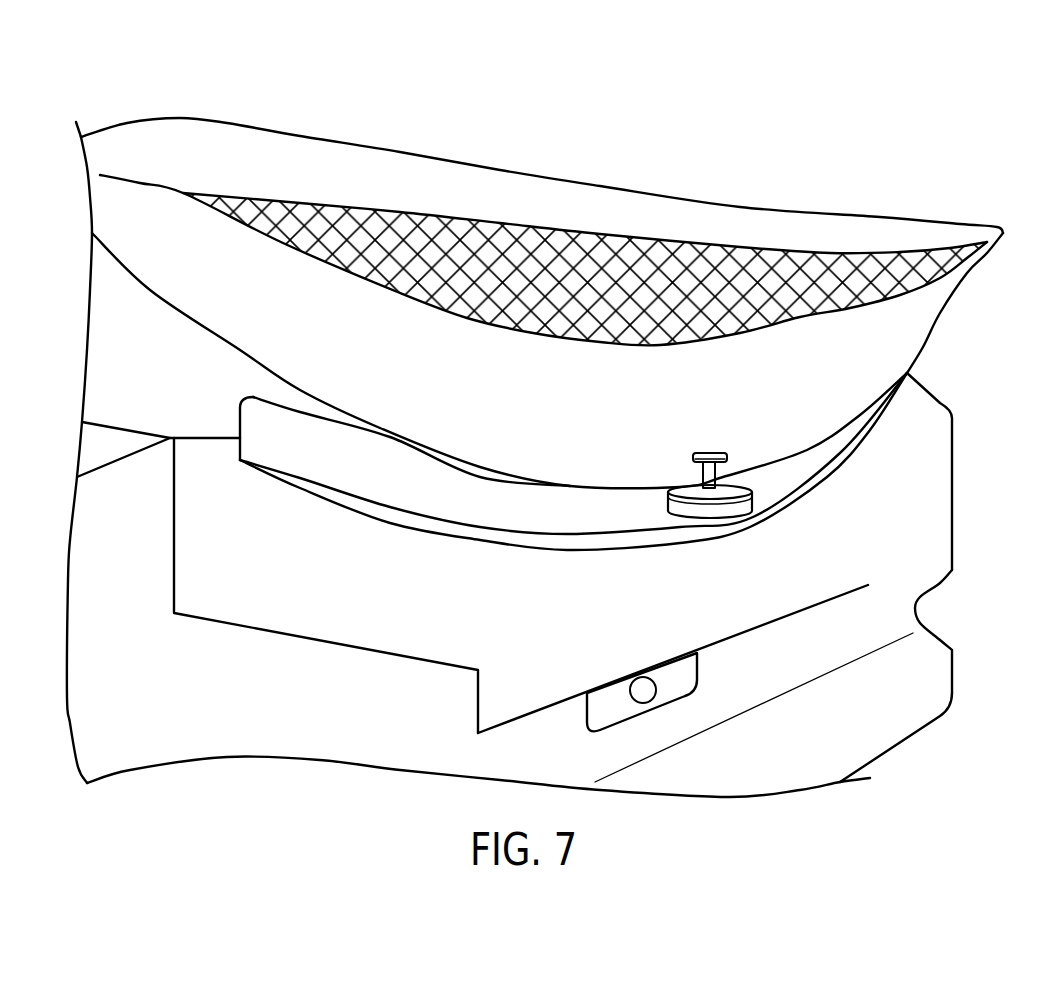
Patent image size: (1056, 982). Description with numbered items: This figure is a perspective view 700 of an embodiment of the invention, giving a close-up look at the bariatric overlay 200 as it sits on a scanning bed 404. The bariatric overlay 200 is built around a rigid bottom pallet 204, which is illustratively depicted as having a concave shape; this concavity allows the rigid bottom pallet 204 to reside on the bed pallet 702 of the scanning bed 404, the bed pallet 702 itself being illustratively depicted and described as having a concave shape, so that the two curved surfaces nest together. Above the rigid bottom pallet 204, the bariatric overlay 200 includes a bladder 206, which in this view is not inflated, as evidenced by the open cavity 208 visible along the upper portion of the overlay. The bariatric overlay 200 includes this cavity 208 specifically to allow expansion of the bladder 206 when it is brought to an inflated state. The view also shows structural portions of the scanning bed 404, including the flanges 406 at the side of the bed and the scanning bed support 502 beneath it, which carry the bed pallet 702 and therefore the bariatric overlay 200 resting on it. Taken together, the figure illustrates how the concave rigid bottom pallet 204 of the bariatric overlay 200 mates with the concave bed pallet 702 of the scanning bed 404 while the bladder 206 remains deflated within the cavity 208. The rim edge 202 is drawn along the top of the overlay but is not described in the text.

The perspective view 700 is at (978, 113).
The bariatric overlay 200 is at (770, 190).
The rim 202 is at (878, 217).
The rigid bottom pallet 204 is at (933, 340).
The bladder 206 is at (752, 407).
The cavity 208 is at (957, 257).
The scanning bed 404 is at (953, 463).
The flanges 406 is at (122, 457).
The scanning bed support 502 is at (953, 677).
The bed pallet 702 is at (240, 412).